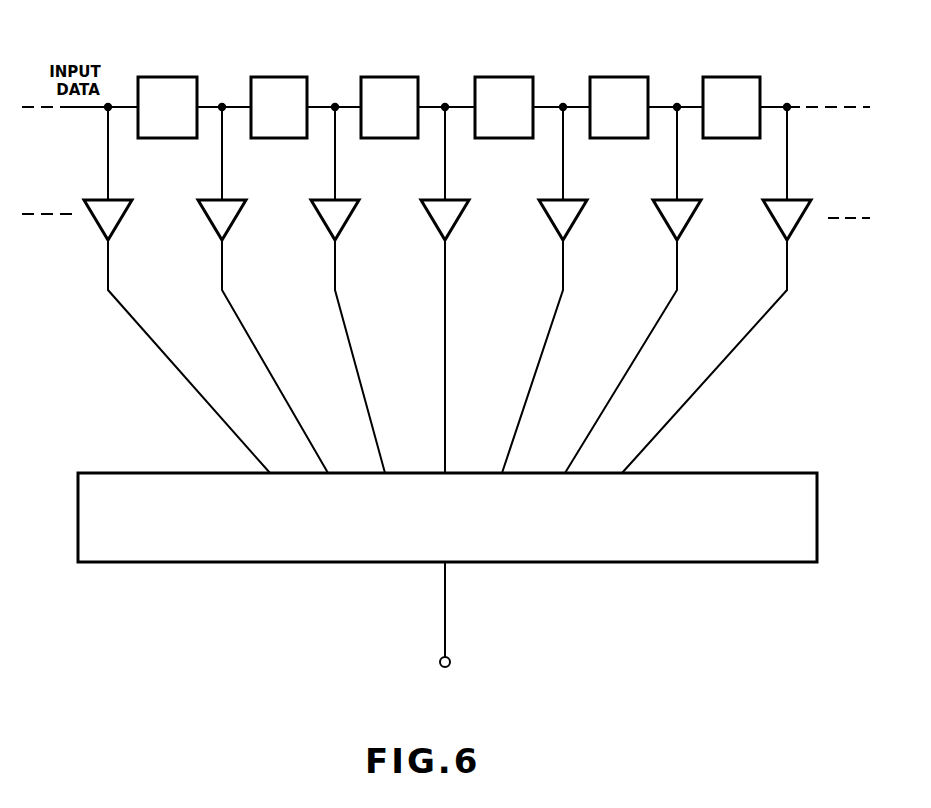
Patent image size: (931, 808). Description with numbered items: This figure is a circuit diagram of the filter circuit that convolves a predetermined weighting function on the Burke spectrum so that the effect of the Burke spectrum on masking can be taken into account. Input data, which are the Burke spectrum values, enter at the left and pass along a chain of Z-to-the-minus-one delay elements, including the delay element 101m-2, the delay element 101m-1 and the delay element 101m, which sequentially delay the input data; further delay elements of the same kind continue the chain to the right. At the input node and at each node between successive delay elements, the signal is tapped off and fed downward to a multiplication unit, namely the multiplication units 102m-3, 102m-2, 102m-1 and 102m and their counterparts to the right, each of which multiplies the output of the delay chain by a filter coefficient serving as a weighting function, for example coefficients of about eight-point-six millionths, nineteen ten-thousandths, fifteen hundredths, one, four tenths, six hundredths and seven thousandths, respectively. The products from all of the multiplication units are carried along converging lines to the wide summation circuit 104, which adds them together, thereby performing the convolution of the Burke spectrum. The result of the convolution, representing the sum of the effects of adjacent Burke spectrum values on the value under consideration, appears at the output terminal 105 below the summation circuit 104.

The delay element 101m-2 is at (168, 80).
The delay element 101m-1 is at (279, 80).
The delay element 101m is at (390, 80).
The multiplication unit 102m-3 is at (120, 215).
The multiplication unit 102m-2 is at (234, 215).
The multiplication unit 102m-1 is at (347, 215).
The multiplication unit 102m is at (457, 215).
The summation circuit 104 is at (748, 482).
The output terminal 105 is at (450, 658).